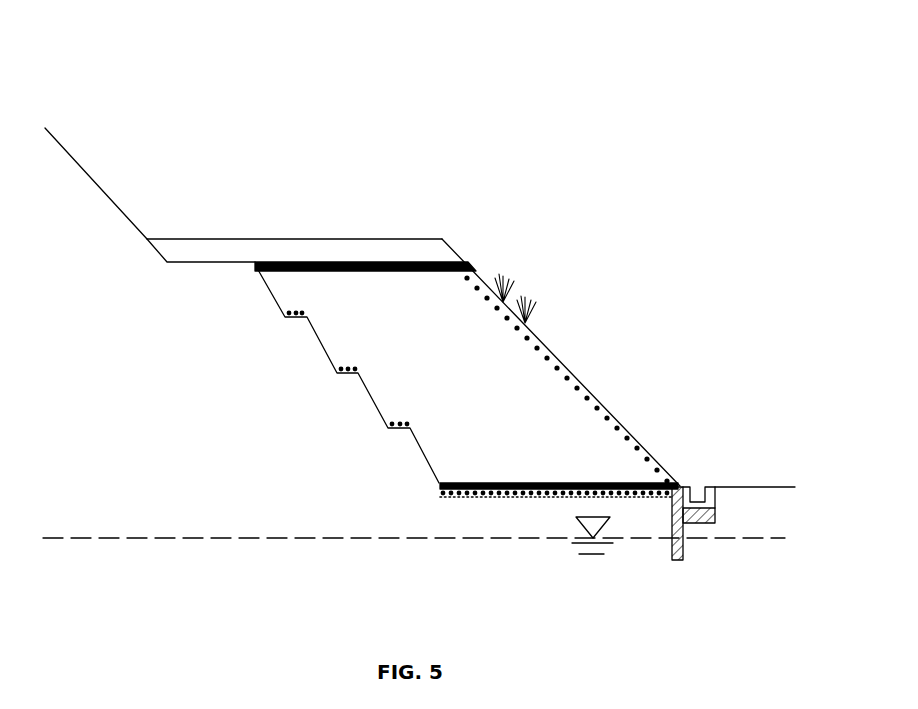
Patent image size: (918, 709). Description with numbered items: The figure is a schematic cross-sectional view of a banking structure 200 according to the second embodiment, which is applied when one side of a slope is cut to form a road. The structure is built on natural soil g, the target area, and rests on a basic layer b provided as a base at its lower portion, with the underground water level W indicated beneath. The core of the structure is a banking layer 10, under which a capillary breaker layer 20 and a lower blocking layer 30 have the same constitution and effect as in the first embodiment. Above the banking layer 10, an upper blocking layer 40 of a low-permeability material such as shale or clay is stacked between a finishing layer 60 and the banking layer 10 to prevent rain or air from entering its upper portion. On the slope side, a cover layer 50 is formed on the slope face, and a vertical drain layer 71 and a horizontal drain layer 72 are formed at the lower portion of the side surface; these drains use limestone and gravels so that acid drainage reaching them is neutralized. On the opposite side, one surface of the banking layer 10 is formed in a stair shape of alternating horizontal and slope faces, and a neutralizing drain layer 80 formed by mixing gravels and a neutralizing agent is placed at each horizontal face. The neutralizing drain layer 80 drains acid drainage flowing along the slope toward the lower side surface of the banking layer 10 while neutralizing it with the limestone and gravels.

The banking structure 200 is at (552, 98).
The banking layer 10 is at (592, 413).
The capillary breaker layer 20 is at (445, 491).
The lower blocking layer 30 is at (493, 483).
The upper blocking layer 40 is at (290, 243).
The cover layer 50 is at (538, 338).
The finishing layer 60 is at (365, 263).
The vertical drain layer 71 is at (670, 545).
The horizontal drain layer 72 is at (715, 515).
The neutralizing drain layer 80 is at (388, 428).
The basic layer b is at (737, 532).
The underground water level W is at (265, 538).
The natural soil g is at (174, 552).